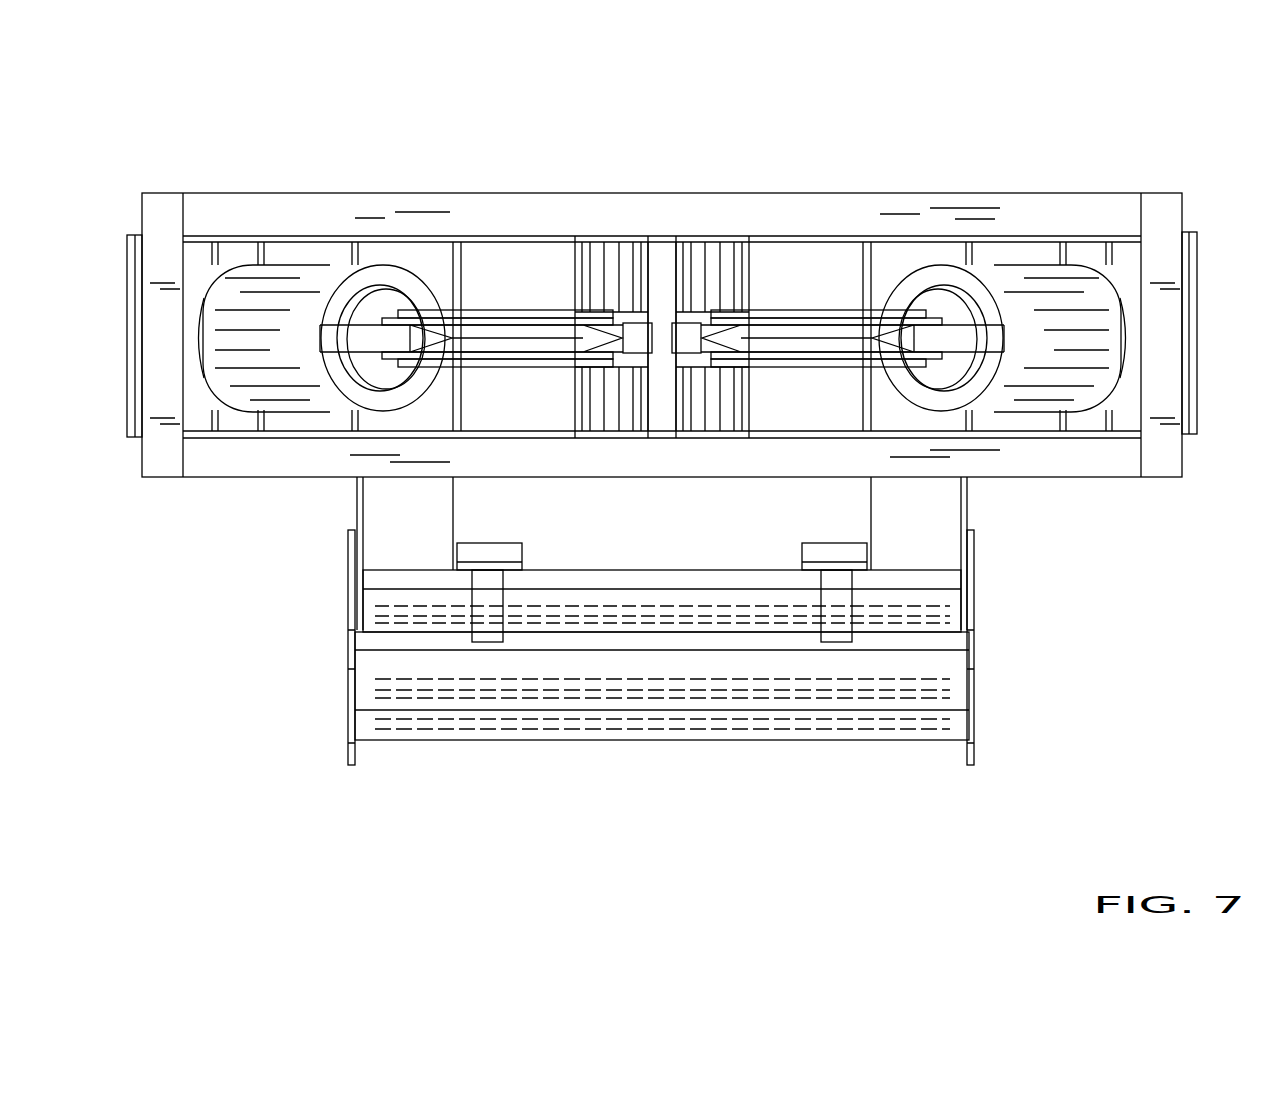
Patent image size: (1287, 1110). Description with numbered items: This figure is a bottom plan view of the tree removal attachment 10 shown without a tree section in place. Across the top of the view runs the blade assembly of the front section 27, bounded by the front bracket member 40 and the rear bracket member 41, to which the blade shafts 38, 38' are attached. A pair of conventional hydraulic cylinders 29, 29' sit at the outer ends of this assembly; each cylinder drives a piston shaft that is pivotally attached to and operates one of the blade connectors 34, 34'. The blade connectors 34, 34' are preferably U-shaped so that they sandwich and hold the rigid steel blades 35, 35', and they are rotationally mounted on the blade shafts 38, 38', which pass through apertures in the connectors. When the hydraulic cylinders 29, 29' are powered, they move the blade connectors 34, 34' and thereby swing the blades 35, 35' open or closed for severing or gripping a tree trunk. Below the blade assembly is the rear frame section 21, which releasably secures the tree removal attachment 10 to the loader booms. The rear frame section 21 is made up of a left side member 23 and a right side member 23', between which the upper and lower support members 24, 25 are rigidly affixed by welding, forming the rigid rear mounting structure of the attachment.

The tree removal attachment 10 is at (1122, 101).
The rear frame section 21 is at (652, 648).
The left side member 23 is at (304, 647).
The right side member 23' is at (1009, 647).
The upper support member 24 is at (630, 690).
The lower support member 25 is at (645, 613).
The front section 27 is at (1184, 201).
The hydraulic cylinder 29 is at (265, 278).
The hydraulic cylinder 29' is at (1060, 394).
The blade connector 34 is at (486, 312).
The blade connector 34' is at (838, 309).
The blade 35 is at (364, 413).
The blade 35' is at (963, 394).
The blade shaft 38 is at (611, 289).
The blade shaft 38' is at (715, 294).
The front bracket member 40 is at (235, 218).
The rear bracket member 41 is at (230, 463).